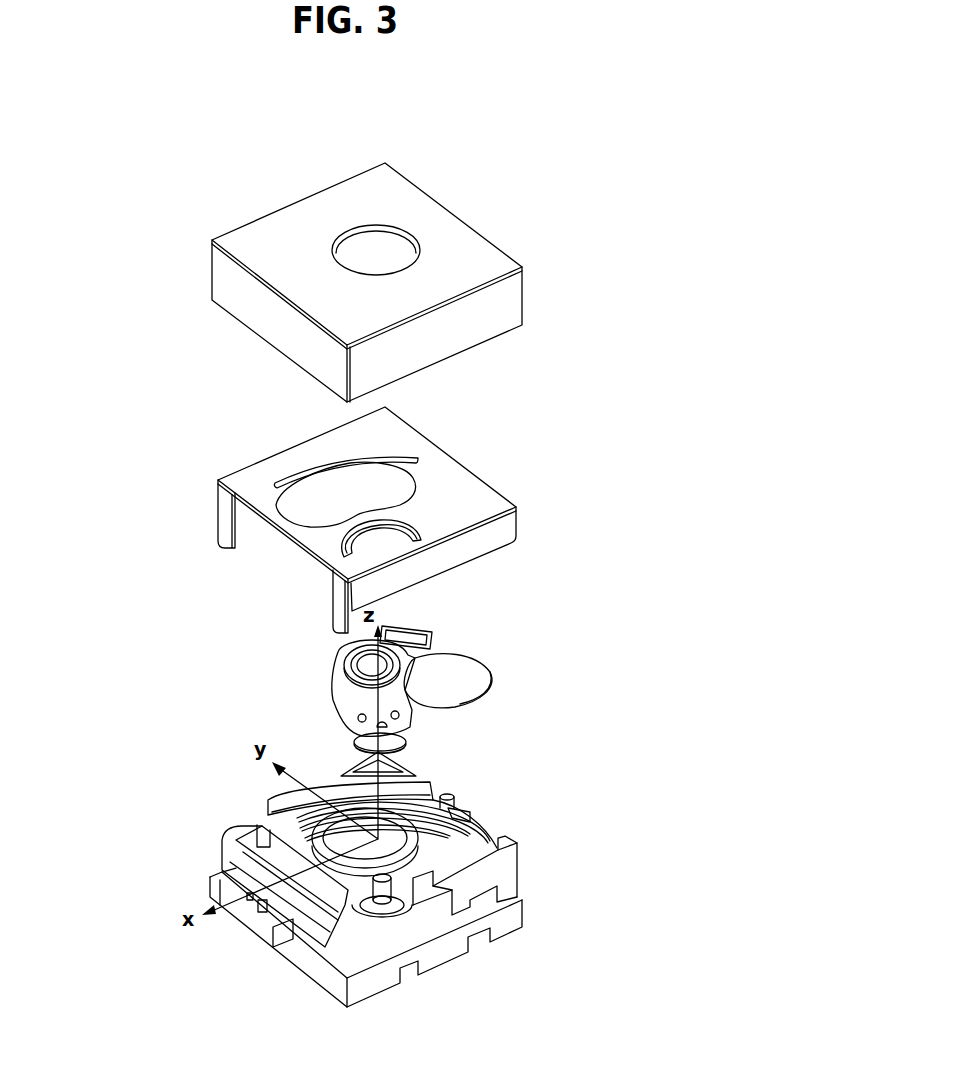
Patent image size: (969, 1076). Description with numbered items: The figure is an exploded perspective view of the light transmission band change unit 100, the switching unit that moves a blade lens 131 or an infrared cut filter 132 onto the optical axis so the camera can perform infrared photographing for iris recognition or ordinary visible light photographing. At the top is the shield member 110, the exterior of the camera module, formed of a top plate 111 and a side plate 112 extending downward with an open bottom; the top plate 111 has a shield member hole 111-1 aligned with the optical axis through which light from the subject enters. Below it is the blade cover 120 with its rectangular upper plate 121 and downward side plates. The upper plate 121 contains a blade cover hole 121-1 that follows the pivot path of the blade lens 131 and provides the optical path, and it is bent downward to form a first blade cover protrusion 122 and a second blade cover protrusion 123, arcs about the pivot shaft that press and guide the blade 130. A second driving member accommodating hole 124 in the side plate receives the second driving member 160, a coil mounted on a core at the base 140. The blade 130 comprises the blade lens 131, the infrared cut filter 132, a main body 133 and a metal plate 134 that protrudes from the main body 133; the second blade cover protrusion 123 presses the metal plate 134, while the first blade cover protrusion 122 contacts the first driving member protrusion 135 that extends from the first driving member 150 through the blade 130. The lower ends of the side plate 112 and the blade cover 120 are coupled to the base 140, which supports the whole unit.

The light transmission band change unit 100 is at (605, 88).
The shield member 110 is at (535, 262).
The top plate 111 is at (282, 245).
The shield member hole 111-1 is at (372, 247).
The side plate 112 is at (258, 304).
The blade cover 120 is at (505, 468).
The upper plate 121 is at (256, 474).
The blade cover hole 121-1 is at (305, 507).
The first blade cover protrusion 122 is at (418, 527).
The second blade cover protrusion 123 is at (414, 458).
The second driving member accommodating hole 124 is at (270, 553).
The blade 130 is at (537, 664).
The blade lens 131 is at (365, 668).
The infrared cut filter 132 is at (460, 687).
The main body 133 is at (350, 698).
The first driving member protrusion 135 is at (355, 717).
The metal plate 134 is at (433, 632).
The first driving member 150 is at (410, 743).
The base 140 is at (545, 870).
The second driving member 160 is at (250, 881).